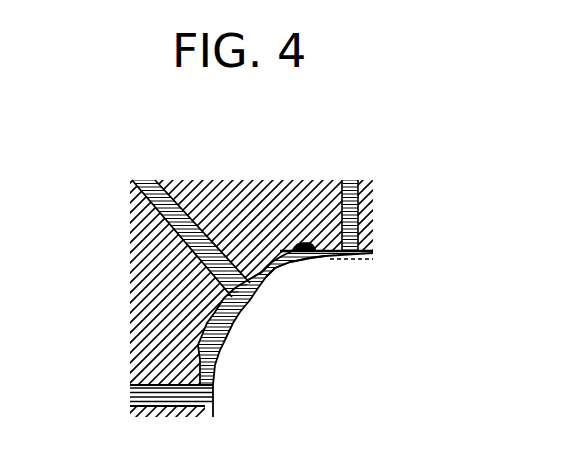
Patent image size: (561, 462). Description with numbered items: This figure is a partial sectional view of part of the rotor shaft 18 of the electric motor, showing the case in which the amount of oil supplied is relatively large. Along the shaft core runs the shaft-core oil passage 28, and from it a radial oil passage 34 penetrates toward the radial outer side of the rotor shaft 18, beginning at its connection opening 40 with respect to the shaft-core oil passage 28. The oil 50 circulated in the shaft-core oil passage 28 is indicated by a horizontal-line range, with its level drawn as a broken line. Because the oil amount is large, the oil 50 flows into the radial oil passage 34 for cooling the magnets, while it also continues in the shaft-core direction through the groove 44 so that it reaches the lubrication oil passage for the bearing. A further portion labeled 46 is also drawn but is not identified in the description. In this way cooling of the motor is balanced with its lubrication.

The rotor shaft 18 is at (147, 337).
The shaft-core oil passage 28 is at (351, 383).
The radial oil passage 34 is at (160, 236).
The connection opening 40 is at (258, 298).
The groove 44 is at (300, 248).
The vertical wall section 46 is at (325, 258).
The oil 50 is at (290, 268).